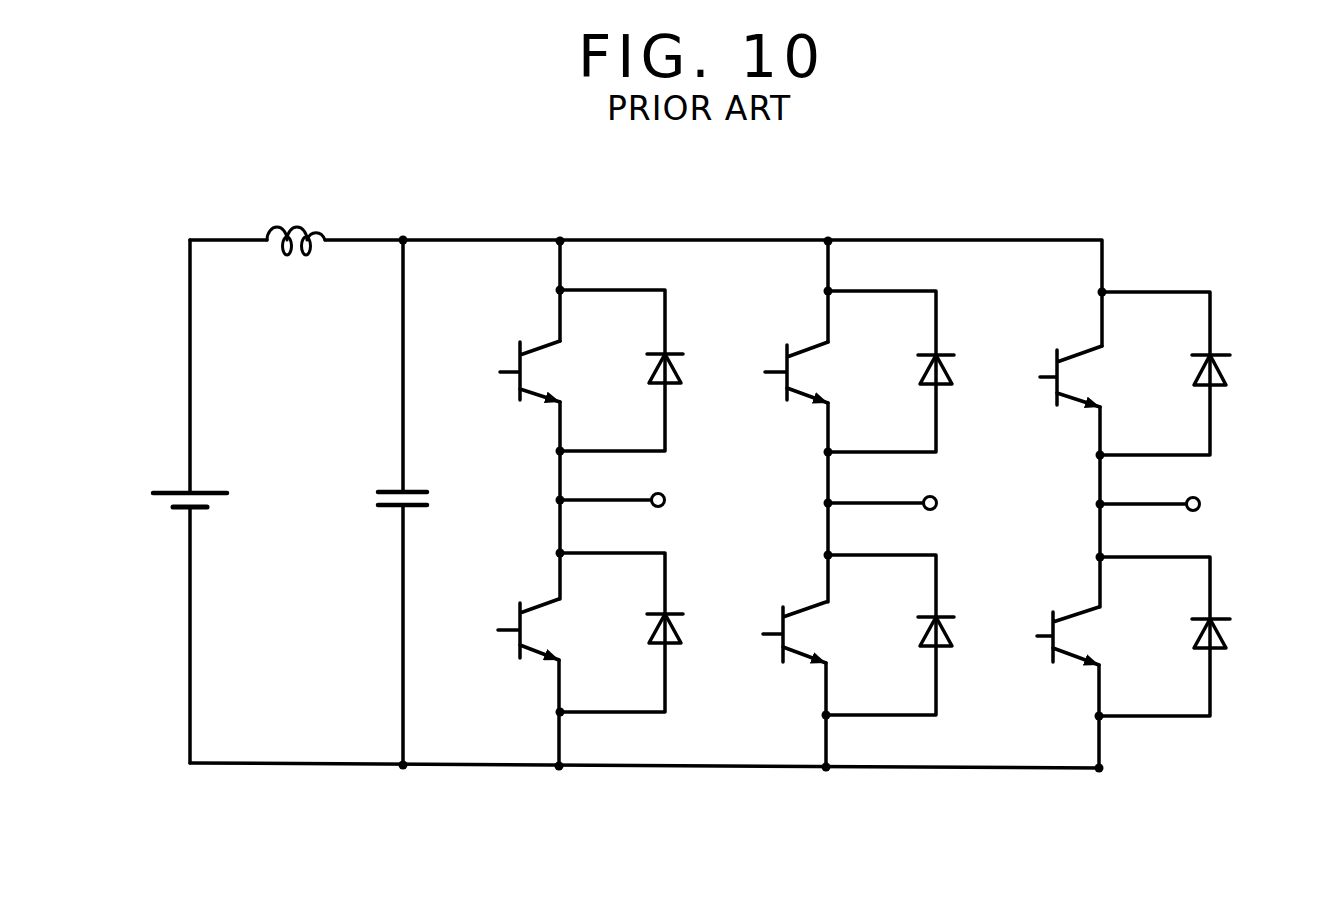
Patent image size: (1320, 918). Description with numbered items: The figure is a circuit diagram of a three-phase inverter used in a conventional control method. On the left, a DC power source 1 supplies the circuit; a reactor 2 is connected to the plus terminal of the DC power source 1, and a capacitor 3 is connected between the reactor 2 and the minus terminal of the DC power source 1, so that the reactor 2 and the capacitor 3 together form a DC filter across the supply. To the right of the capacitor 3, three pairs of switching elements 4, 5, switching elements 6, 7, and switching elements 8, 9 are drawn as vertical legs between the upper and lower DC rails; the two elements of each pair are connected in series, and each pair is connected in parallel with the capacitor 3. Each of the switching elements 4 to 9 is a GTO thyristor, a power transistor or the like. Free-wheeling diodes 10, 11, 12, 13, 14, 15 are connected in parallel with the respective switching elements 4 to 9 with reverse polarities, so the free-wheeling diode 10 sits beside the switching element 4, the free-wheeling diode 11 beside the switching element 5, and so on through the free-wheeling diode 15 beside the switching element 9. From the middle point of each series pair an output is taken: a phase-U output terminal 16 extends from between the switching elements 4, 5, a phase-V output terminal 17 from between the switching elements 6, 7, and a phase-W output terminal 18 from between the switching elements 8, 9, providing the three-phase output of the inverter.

The DC power source 1 is at (197, 491).
The reactor 2 is at (320, 222).
The capacitor 3 is at (398, 488).
The switching element 4 is at (534, 348).
The switching element 5 is at (534, 613).
The switching element 6 is at (802, 353).
The switching element 7 is at (800, 617).
The switching element 8 is at (1072, 358).
The switching element 9 is at (1075, 622).
The free-wheeling diode 10 is at (672, 352).
The free-wheeling diode 11 is at (680, 635).
The free-wheeling diode 12 is at (953, 378).
The free-wheeling diode 13 is at (950, 637).
The free-wheeling diode 14 is at (1230, 363).
The free-wheeling diode 15 is at (1225, 643).
The phase-U output terminal 16 is at (665, 507).
The phase-V output terminal 17 is at (937, 507).
The phase-W output terminal 18 is at (1202, 510).